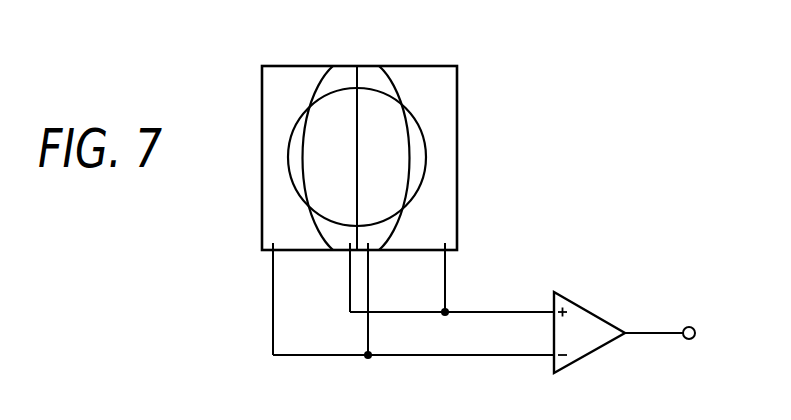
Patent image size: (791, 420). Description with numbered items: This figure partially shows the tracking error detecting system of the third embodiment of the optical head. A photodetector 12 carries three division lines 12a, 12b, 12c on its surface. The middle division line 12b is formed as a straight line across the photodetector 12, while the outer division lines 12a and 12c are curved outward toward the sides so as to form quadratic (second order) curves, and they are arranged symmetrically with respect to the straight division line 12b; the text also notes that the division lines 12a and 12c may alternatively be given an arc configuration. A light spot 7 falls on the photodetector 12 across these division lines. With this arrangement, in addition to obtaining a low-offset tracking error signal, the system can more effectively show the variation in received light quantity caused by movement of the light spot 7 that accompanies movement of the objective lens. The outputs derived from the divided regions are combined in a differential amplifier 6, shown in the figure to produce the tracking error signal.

The photodetector 12 is at (458, 90).
The division line 12a is at (323, 84).
The division line 12b is at (358, 72).
The division line 12c is at (398, 82).
The light spot 7 is at (388, 148).
The differential amplifier 6 is at (582, 300).